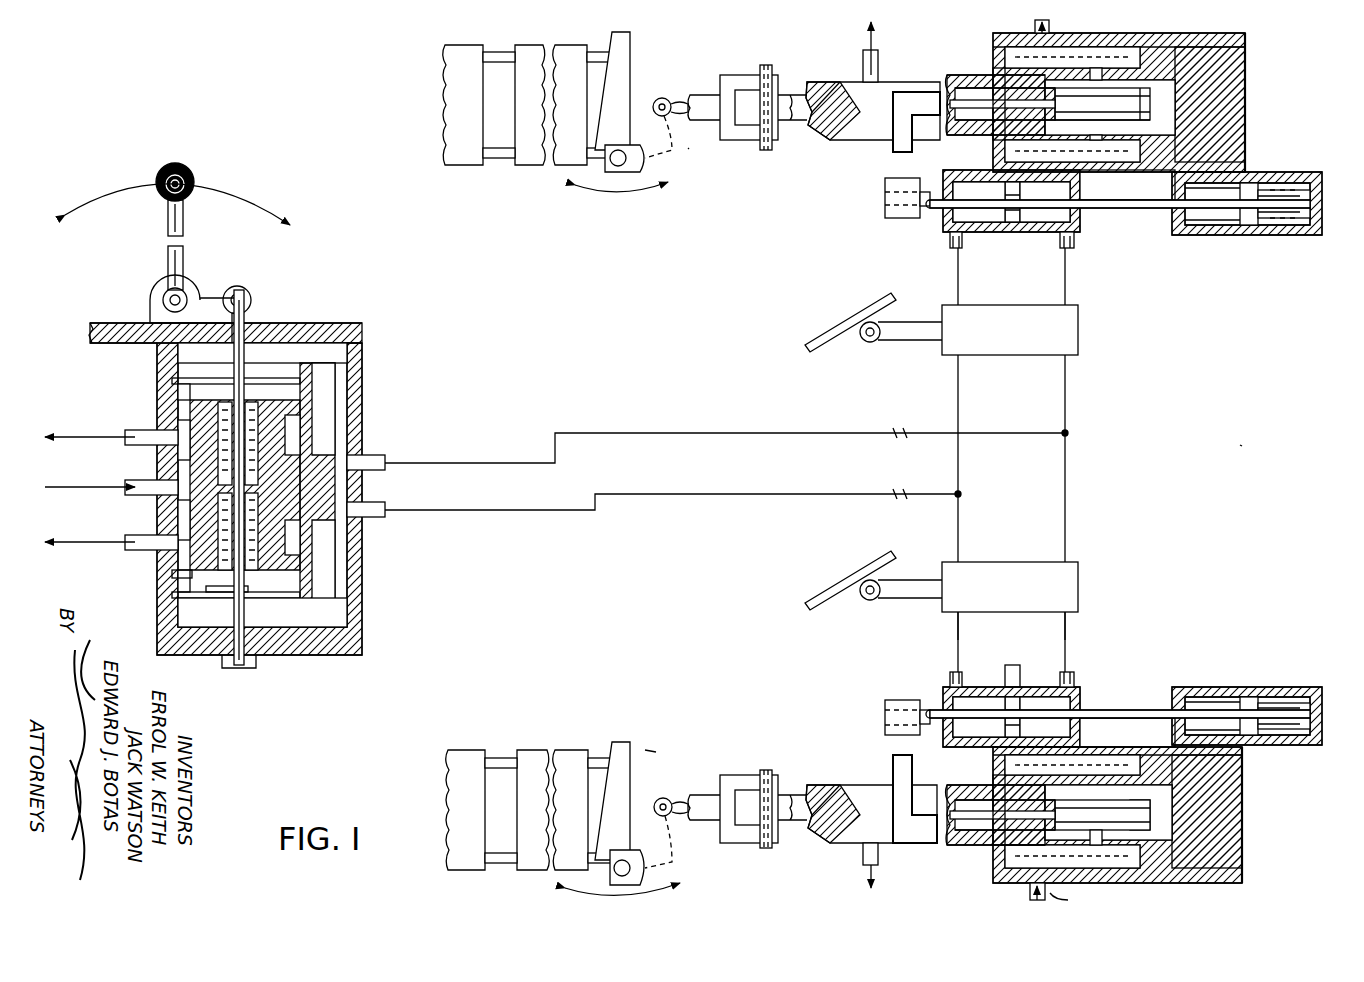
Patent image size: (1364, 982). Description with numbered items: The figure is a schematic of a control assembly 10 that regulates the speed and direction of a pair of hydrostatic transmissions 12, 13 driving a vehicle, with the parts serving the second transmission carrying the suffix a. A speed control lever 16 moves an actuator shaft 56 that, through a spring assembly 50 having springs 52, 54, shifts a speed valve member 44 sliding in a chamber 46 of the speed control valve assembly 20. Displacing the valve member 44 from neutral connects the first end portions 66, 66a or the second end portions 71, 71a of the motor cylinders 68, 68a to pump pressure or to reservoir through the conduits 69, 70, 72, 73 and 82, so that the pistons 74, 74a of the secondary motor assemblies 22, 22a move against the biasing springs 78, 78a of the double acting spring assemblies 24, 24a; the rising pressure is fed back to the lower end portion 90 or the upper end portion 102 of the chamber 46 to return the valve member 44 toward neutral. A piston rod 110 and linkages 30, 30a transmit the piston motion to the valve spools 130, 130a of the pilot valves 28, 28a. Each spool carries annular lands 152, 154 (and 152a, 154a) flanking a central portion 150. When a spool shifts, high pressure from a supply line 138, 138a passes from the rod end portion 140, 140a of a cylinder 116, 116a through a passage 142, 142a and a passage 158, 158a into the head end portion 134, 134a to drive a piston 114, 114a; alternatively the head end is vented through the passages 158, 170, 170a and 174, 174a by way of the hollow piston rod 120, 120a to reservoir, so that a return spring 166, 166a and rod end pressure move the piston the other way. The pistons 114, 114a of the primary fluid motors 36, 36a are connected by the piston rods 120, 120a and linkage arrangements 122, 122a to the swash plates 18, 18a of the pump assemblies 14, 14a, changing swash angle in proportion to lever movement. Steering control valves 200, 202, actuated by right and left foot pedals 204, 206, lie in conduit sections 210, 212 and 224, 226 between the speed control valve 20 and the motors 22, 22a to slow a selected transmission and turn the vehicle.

The control assembly 10 is at (1250, 450).
The hydrostatic transmission 12 is at (660, 750).
The hydrostatic transmission 13 is at (690, 150).
The pump assembly 14 is at (550, 748).
The pump assembly 14a is at (528, 180).
The speed control lever 16 is at (172, 172).
The swash plate 18 is at (630, 740).
The swash plate 18a is at (628, 48).
The speed control valve assembly 20 is at (375, 420).
The secondary motor assembly 22 is at (1085, 700).
The secondary motor assembly 22a is at (1078, 238).
The double acting spring assembly 24 is at (1315, 690).
The double acting spring assembly 24a is at (1312, 172).
The pilot valve 28 is at (1160, 815).
The pilot valve 28a is at (1160, 100).
The linkage 30 is at (890, 748).
The linkage 30a is at (895, 152).
The primary fluid motor 36 is at (1250, 855).
The primary fluid motor 36a is at (1252, 108).
The speed valve member 44 is at (178, 578).
The valve chamber 46 is at (200, 605).
The spring assembly 50 is at (178, 392).
The spring 52 is at (262, 392).
The spring 54 is at (262, 598).
The actuator shaft 56 is at (252, 318).
The first end portion 66 is at (975, 705).
The first end portion 66a is at (975, 230).
The motor cylinder 68 is at (1015, 665).
The motor cylinder 68a is at (940, 232).
The conduit 69 is at (137, 490).
The conduit 70 is at (922, 490).
The second end portion 71 is at (1040, 707).
The second end portion 71a is at (1045, 232).
The conduit 72 is at (925, 428).
The conduit 73 is at (137, 440).
The piston 74 is at (1005, 737).
The piston 74a is at (1012, 222).
The biasing spring 78 is at (1245, 697).
The biasing spring 78a is at (1245, 225).
The conduit 82 is at (150, 555).
The lower end portion 90 is at (212, 665).
The upper end portion 102 is at (200, 355).
The piston rod 110 is at (1140, 190).
The piston 114 is at (1225, 815).
The piston 114a is at (1225, 90).
The cylinder 116 is at (1235, 778).
The cylinder 116a is at (1238, 125).
The piston rod 120 is at (770, 792).
The piston rod 120a is at (790, 145).
The linkage arrangement 122 is at (668, 818).
The linkage arrangement 122a is at (655, 118).
The valve spool 130 is at (1010, 840).
The valve spool 130a is at (1010, 128).
The head end portion 134 is at (1222, 763).
The head end portion 134a is at (1215, 52).
The supply line 138 is at (1028, 892).
The supply line 138a is at (1050, 57).
The rod end portion 140 is at (1150, 856).
The rod end portion 140a is at (1150, 150).
The passage 142 is at (1105, 835).
The passage 142a is at (1095, 75).
The central portion 150 is at (1140, 802).
The annular land 152 is at (1055, 805).
The annular land 152a is at (1055, 100).
The annular land 154 is at (1155, 822).
The annular land 154a is at (1150, 105).
The passage 158 is at (1150, 782).
The passage 158a is at (1150, 125).
The return spring 166 is at (1110, 760).
The return spring 166a is at (1040, 45).
The passage 170 is at (865, 815).
The passage 170a is at (860, 80).
The passage 174 is at (878, 866).
The passage 174a is at (870, 55).
The steering control valve 200 is at (1085, 590).
The steering control valve 202 is at (1080, 340).
The right foot pedal 204 is at (866, 575).
The left foot pedal 206 is at (862, 318).
The conduit section 210 is at (960, 470).
The conduit section 212 is at (1065, 500).
The conduit section 224 is at (955, 620).
The conduit section 226 is at (1068, 620).